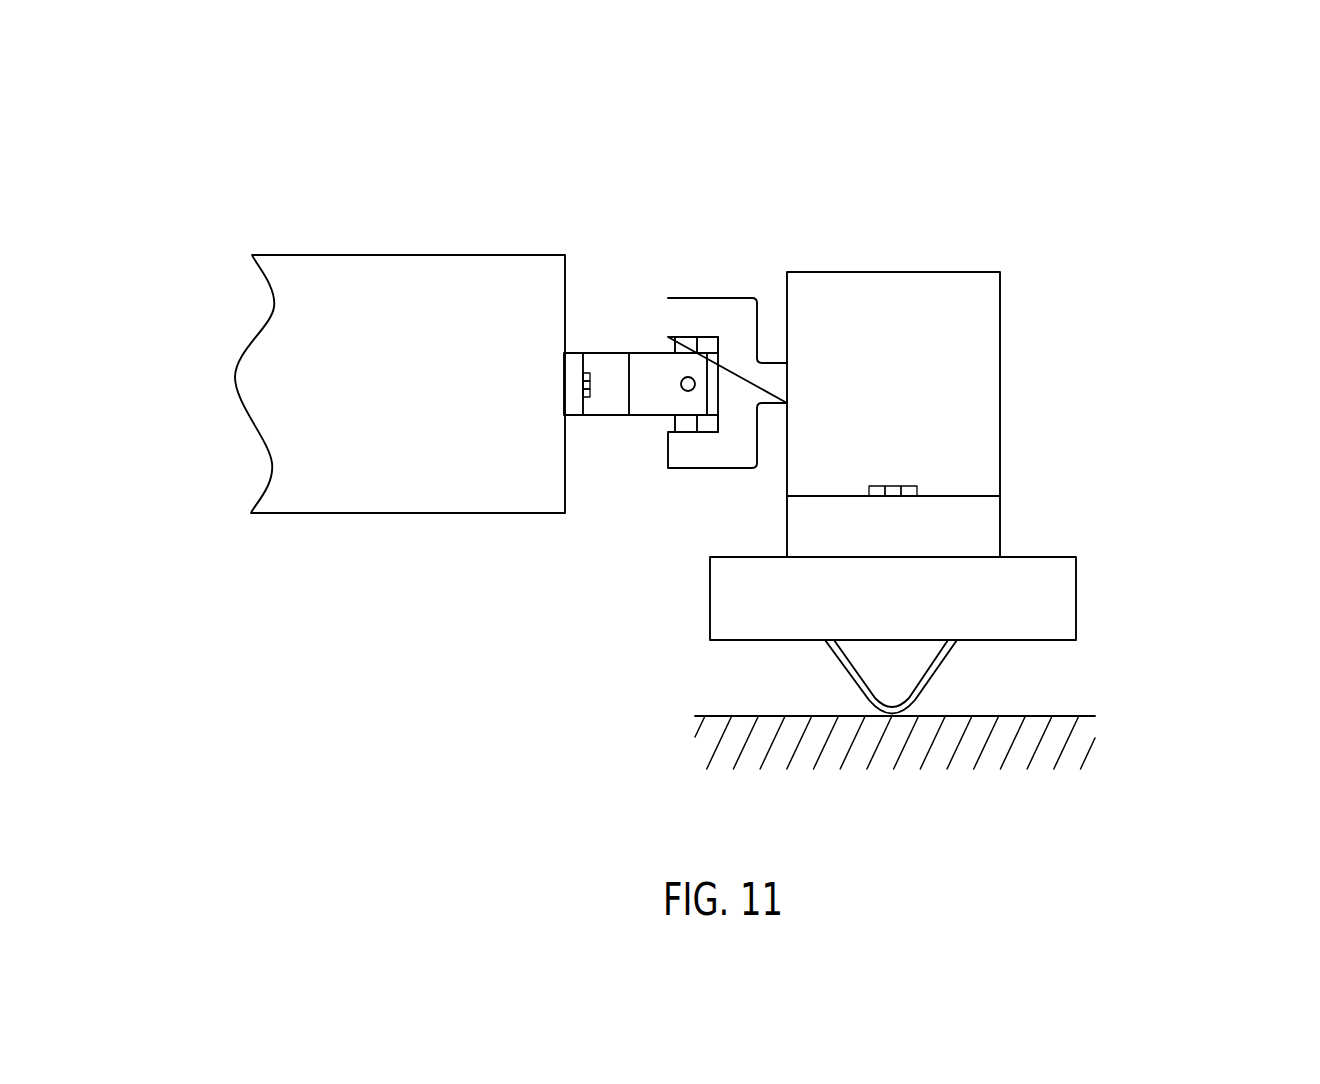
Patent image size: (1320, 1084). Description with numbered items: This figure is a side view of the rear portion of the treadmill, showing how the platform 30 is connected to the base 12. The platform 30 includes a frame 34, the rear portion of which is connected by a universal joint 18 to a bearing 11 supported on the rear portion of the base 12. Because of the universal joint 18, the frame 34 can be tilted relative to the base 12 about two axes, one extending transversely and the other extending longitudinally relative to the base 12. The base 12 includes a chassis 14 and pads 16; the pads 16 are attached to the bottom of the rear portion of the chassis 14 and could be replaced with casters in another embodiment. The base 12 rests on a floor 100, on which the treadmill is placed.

The platform 30 is at (237, 199).
The frame 34 is at (379, 283).
The bearing 11 is at (913, 309).
The base 12 is at (1117, 536).
The chassis 14 is at (1060, 606).
The pad 16 is at (867, 663).
The universal joint 18 is at (624, 524).
The floor 100 is at (1017, 716).